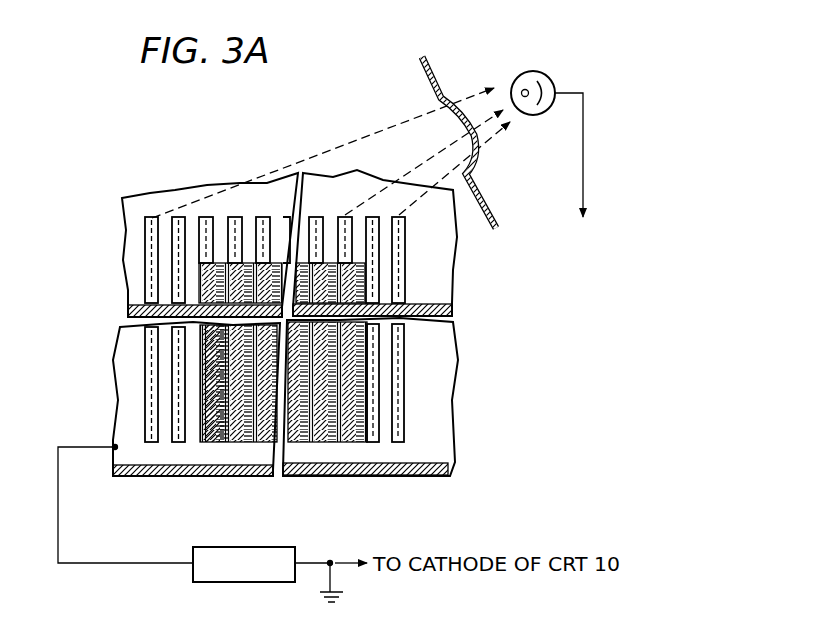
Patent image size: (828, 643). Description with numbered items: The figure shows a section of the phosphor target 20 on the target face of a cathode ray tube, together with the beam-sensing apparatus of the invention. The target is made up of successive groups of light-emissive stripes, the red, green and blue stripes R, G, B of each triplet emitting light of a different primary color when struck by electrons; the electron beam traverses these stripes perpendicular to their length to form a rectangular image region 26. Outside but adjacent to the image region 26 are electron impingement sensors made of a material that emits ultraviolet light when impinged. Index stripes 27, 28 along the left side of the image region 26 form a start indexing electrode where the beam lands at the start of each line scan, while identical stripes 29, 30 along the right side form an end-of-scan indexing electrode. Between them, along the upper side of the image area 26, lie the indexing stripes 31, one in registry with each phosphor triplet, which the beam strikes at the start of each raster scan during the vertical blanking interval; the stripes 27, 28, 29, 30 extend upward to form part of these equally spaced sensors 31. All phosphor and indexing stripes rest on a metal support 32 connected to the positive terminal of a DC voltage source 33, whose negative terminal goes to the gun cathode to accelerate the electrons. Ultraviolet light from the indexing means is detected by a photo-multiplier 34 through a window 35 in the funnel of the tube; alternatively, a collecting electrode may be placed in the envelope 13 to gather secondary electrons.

The envelope 13 is at (437, 70).
The phosphor target 20 is at (112, 225).
The image region 26 is at (313, 447).
The index stripe 27 is at (150, 217).
The index stripe 28 is at (178, 217).
The index stripe 29 is at (370, 217).
The index stripe 30 is at (396, 217).
The indexing stripes 31 is at (344, 217).
The metal support 32 is at (427, 476).
The DC voltage source 33 is at (258, 547).
The photo-multiplier 34 is at (545, 73).
The window 35 is at (478, 160).
The red phosphor stripe R is at (205, 443).
The green phosphor stripe G is at (213, 443).
The blue phosphor stripe B is at (225, 443).